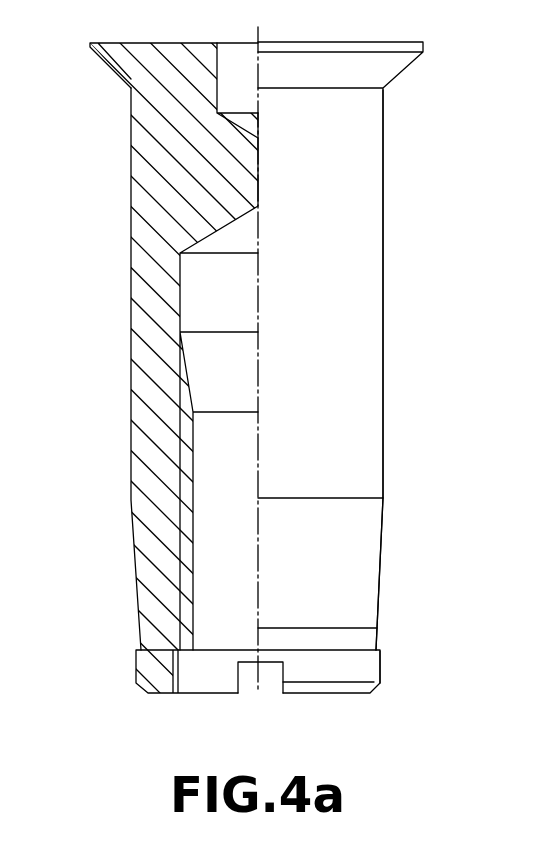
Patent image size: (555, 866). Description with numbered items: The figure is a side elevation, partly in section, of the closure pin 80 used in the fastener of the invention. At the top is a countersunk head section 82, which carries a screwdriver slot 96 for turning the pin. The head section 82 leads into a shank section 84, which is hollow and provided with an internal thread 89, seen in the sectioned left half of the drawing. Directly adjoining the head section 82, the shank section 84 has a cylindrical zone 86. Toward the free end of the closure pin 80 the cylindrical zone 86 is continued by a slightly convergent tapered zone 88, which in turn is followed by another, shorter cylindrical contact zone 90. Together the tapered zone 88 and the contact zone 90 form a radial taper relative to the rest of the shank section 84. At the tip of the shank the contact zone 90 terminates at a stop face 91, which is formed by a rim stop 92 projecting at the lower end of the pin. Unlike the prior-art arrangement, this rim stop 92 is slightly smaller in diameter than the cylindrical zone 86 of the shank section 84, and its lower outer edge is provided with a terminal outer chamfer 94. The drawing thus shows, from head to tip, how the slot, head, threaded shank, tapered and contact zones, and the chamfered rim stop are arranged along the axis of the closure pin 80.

The closure pin 80 is at (438, 306).
The countersunk head section 82 is at (126, 66).
The shank section 84 is at (108, 316).
The cylindrical zone 86 is at (360, 408).
The tapered zone 88 is at (365, 556).
The internal thread 89 is at (186, 490).
The contact zone 90 is at (360, 632).
The stop face 91 is at (366, 648).
The rim stop 92 is at (360, 672).
The terminal outer chamfer 94 is at (316, 690).
The screwdriver slot 96 is at (184, 57).